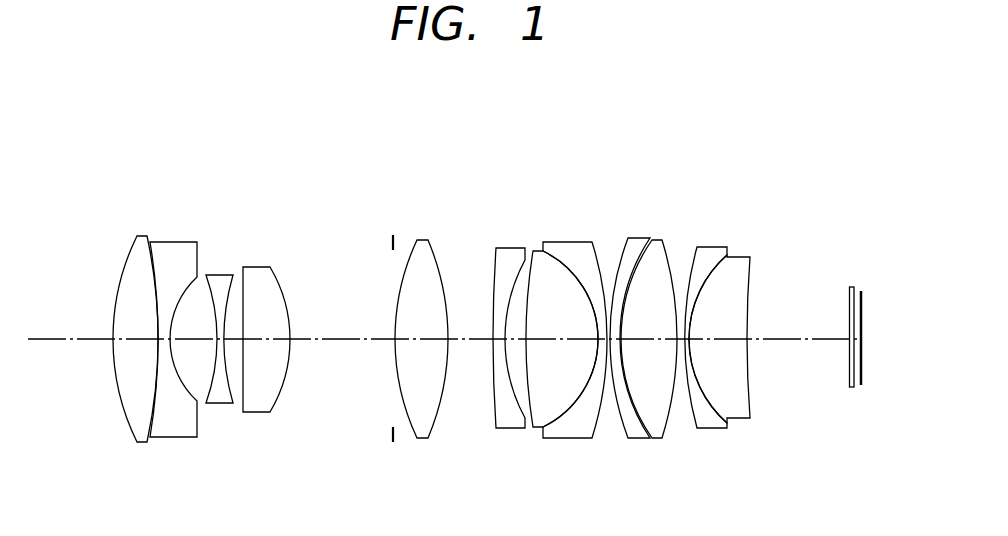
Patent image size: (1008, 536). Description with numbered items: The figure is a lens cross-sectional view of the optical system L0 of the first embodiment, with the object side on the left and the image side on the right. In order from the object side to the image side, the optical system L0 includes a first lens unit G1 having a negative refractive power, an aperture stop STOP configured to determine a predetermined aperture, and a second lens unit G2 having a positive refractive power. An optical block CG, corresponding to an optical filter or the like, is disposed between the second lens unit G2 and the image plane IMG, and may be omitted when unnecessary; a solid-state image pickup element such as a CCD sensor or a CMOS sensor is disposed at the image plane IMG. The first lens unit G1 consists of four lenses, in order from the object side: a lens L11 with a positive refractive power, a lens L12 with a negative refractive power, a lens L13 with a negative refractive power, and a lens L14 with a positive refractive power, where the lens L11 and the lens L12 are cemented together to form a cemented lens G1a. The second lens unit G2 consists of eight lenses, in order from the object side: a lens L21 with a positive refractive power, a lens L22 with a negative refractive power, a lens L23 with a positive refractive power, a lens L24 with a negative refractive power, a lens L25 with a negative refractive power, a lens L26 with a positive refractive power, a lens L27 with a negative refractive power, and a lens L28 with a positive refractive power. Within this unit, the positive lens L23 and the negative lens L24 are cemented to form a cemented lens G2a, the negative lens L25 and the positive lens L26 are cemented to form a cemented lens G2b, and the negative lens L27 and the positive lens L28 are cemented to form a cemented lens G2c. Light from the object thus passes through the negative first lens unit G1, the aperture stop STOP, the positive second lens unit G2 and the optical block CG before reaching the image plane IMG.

The optical system L0 is at (802, 113).
The first lens unit G1 is at (292, 175).
The second lens unit G2 is at (802, 175).
The cemented lens G1a is at (202, 450).
The cemented lens G2a is at (606, 449).
The cemented lens G2b is at (673, 449).
The cemented lens G2c is at (753, 449).
The lens L11 is at (143, 237).
The lens L12 is at (182, 248).
The lens L13 is at (222, 280).
The lens L14 is at (256, 273).
The lens L21 is at (420, 240).
The lens L22 is at (498, 260).
The lens L23 is at (538, 257).
The lens L24 is at (577, 247).
The lens L25 is at (633, 240).
The lens L26 is at (661, 257).
The lens L27 is at (712, 258).
The lens L28 is at (737, 258).
The aperture stop STOP is at (393, 443).
The optical block CG is at (852, 388).
The image plane IMG is at (862, 296).